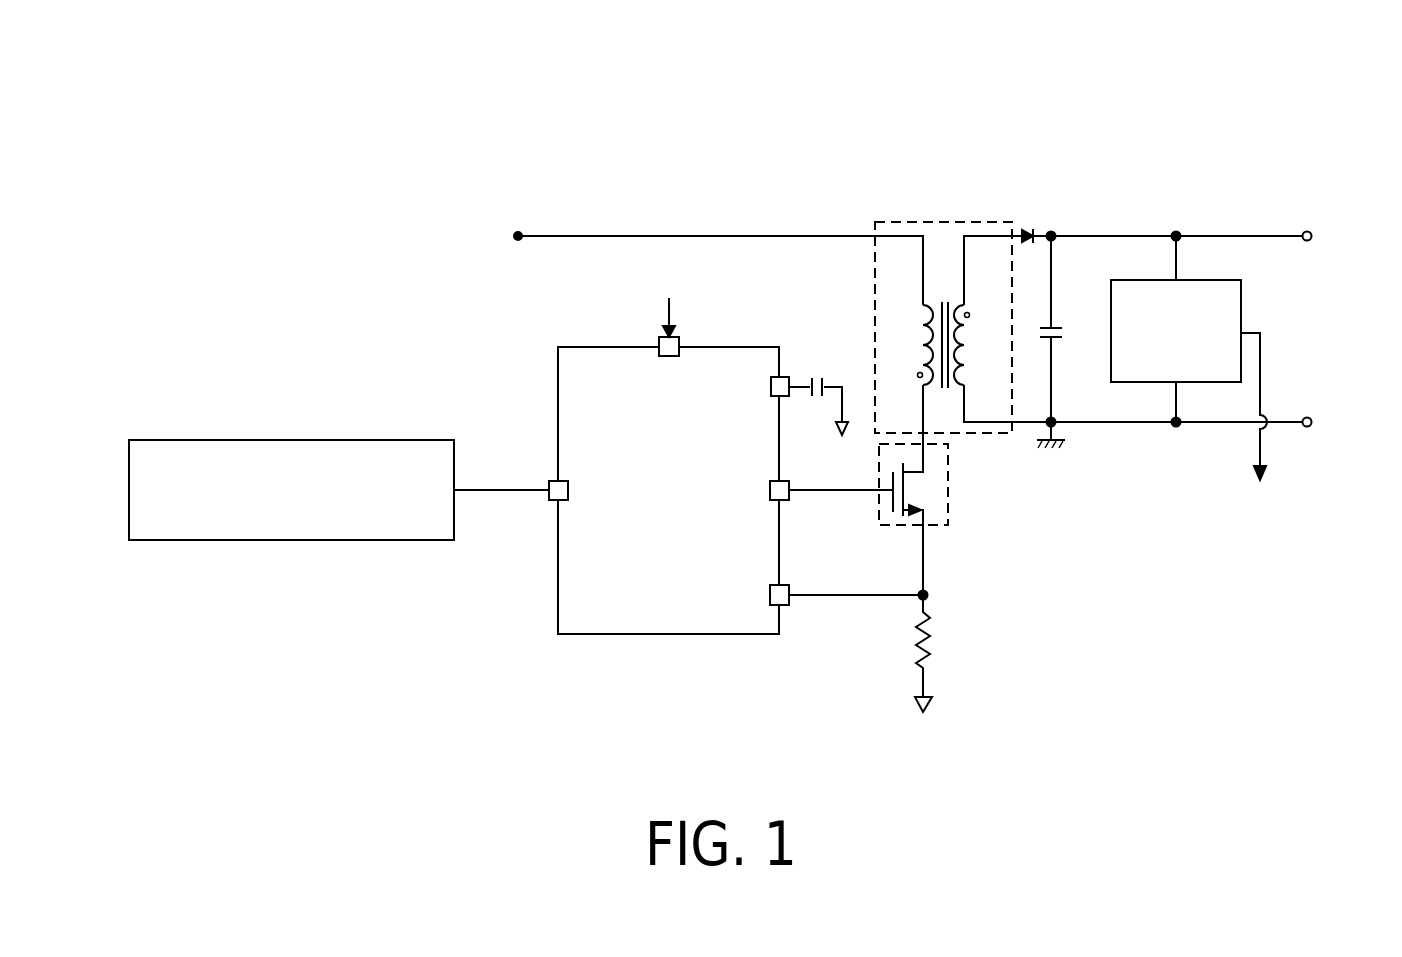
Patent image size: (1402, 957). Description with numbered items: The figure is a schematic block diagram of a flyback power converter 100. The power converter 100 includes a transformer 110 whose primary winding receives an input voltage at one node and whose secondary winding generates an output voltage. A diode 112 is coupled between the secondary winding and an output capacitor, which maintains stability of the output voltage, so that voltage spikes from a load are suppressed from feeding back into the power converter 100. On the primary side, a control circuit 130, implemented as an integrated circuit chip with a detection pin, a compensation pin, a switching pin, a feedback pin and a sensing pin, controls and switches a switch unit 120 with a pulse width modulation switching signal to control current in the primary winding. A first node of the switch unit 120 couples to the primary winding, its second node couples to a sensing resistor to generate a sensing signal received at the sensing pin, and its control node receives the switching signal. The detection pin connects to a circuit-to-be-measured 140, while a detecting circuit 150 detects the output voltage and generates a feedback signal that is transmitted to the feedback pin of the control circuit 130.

The power converter 100 is at (1245, 57).
The transformer 110 is at (942, 222).
The diode 112 is at (1025, 231).
The switch unit 120 is at (948, 484).
The control circuit 130 is at (727, 634).
The circuit-to-be-measured 140 is at (387, 540).
The detecting circuit 150 is at (1241, 290).